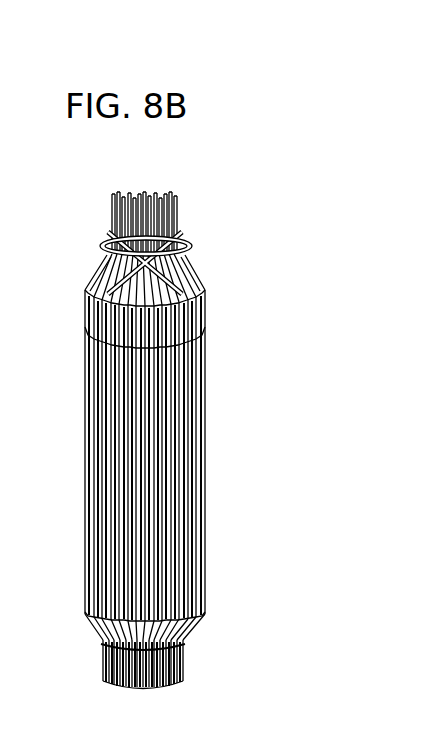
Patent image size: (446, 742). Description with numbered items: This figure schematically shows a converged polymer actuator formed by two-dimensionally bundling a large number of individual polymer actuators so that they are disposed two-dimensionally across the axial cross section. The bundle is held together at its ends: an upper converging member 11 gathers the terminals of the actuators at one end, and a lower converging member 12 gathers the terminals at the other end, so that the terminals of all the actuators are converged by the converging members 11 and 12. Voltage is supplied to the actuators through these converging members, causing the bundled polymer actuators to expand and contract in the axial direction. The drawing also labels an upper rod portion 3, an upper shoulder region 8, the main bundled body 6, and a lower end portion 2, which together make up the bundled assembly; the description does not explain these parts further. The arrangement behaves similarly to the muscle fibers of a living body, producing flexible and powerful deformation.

The lower end portion of rod bundle 2 is at (176, 658).
The upper end rods of bundle 3 is at (170, 212).
The main body of rod bundle 6 is at (192, 450).
The upper shoulder portion 8 is at (78, 302).
The converging member 11 is at (103, 235).
The converging member 12 is at (93, 632).